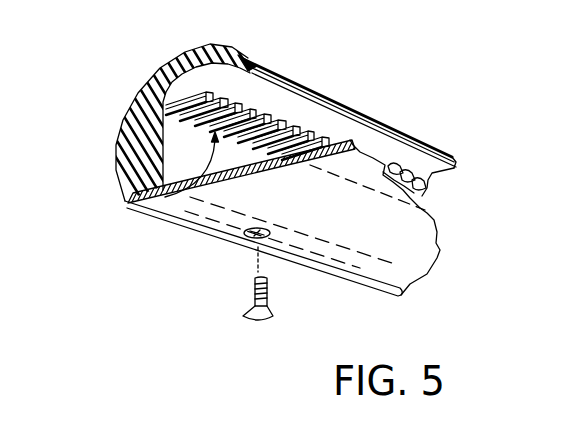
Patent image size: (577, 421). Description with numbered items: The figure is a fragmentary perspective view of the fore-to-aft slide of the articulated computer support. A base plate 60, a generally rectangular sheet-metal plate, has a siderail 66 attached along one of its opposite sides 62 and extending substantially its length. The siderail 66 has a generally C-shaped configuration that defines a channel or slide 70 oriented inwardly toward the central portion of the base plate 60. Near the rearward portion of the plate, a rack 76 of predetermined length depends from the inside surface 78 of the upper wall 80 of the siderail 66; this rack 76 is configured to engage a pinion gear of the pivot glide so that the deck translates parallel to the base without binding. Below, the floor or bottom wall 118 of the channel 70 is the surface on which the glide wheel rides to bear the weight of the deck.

The base plate 60 is at (345, 223).
The side of plate 62 is at (106, 126).
The siderail 66 is at (147, 93).
The channel or slide 70 is at (180, 153).
The rack 76 is at (170, 209).
The inside surface 78 is at (383, 143).
The upper wall 80 is at (337, 107).
The floor or bottom wall 118 is at (215, 274).